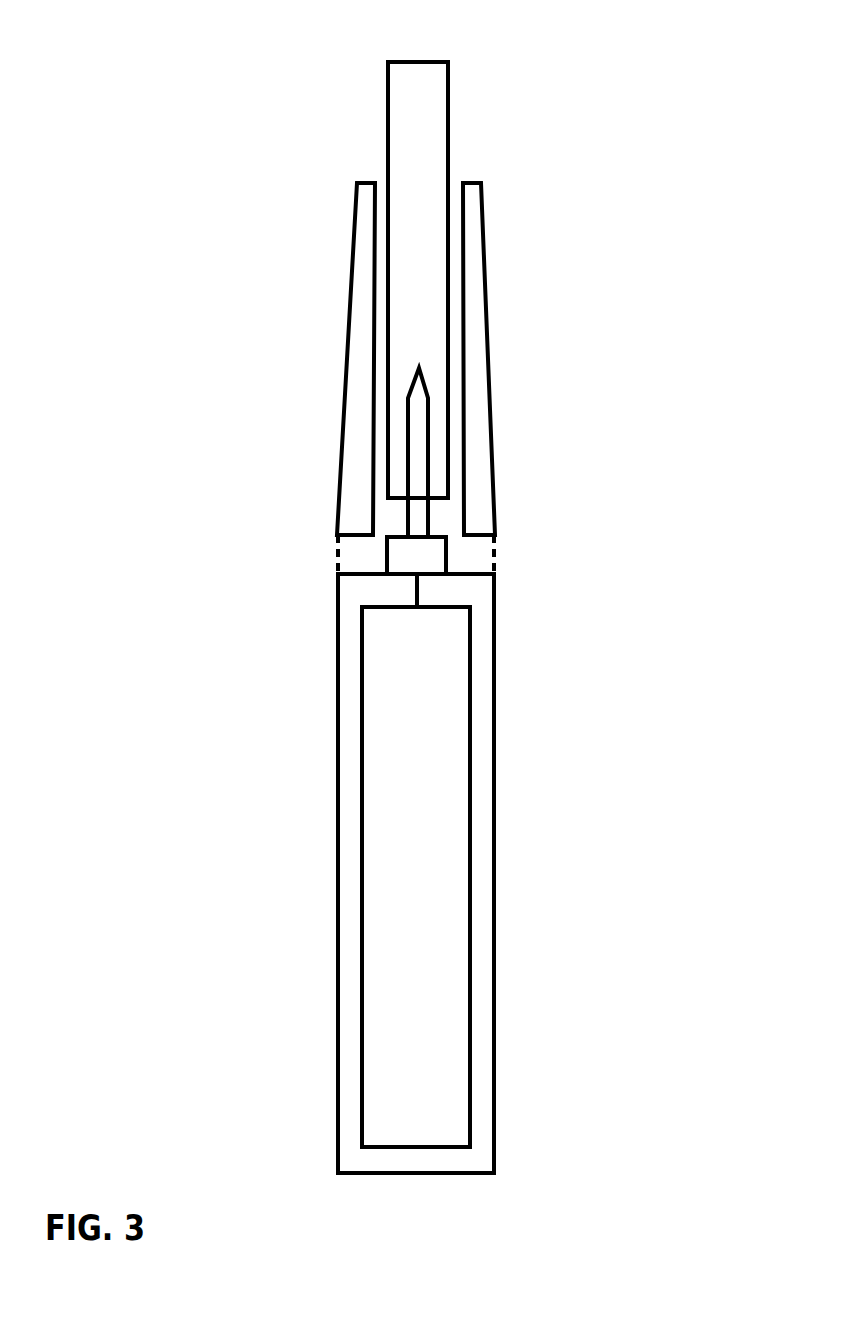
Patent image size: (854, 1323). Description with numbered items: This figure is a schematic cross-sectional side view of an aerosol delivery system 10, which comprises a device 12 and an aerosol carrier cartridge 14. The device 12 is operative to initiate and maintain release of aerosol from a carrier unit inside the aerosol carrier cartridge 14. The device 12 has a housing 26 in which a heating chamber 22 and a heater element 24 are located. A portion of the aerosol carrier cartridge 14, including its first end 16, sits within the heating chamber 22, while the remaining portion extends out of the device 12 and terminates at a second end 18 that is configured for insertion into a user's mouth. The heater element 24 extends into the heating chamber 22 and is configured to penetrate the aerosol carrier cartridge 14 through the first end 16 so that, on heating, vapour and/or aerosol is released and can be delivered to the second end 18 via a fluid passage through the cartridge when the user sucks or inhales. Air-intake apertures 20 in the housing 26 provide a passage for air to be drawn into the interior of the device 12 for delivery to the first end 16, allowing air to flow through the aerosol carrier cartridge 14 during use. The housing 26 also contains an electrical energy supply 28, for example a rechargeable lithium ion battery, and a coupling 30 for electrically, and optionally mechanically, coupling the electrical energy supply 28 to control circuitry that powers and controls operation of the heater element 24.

The aerosol delivery system 10 is at (156, 55).
The device 12 is at (310, 645).
The aerosol carrier cartridge 14 is at (358, 146).
The first end 16 is at (408, 498).
The second end 18 is at (450, 61).
The air-intake apertures 20 is at (497, 548).
The heating chamber 22 is at (453, 220).
The heater element 24 is at (422, 478).
The housing 26 is at (500, 1008).
The electrical energy supply 28 is at (396, 863).
The coupling 30 is at (413, 552).